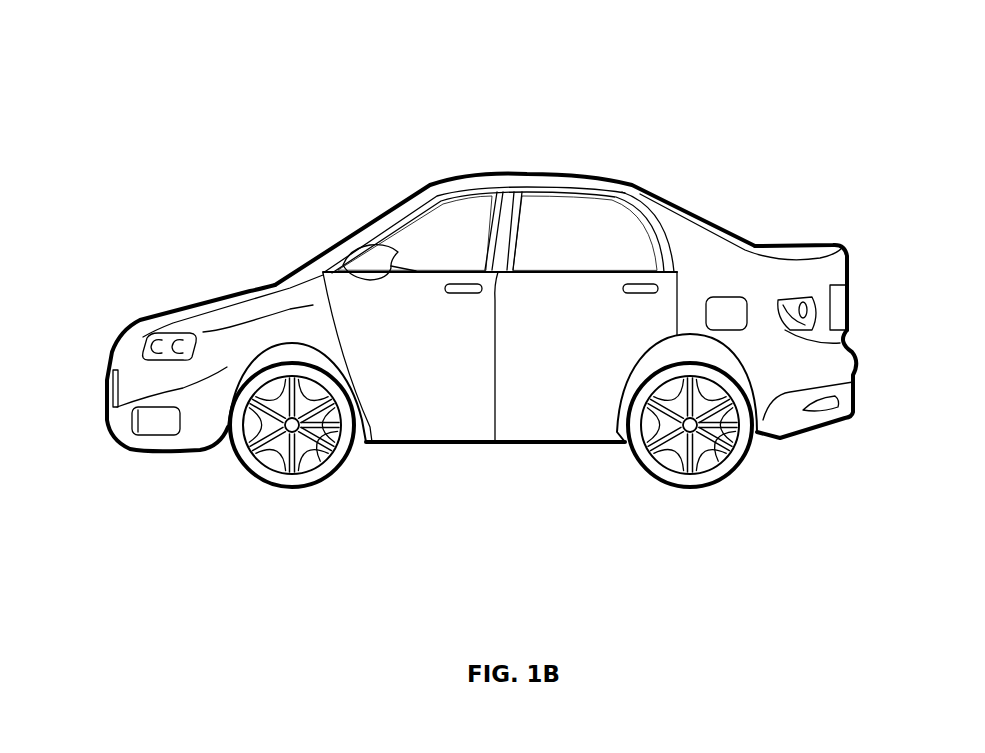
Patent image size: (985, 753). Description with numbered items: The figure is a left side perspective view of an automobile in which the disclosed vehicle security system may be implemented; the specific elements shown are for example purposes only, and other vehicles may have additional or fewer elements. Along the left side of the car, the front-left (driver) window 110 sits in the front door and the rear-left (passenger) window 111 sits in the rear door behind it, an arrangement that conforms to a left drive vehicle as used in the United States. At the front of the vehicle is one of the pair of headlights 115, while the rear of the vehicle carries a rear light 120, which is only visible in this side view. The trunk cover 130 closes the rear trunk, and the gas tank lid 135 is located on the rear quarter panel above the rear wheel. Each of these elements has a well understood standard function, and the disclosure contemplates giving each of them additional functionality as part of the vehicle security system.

The front-left (driver) window 110 is at (443, 225).
The rear-left (passenger) window 111 is at (588, 235).
The headlight 115 is at (167, 335).
The rear light 120 is at (850, 330).
The trunk cover 130 is at (783, 243).
The gas tank lid 135 is at (747, 318).